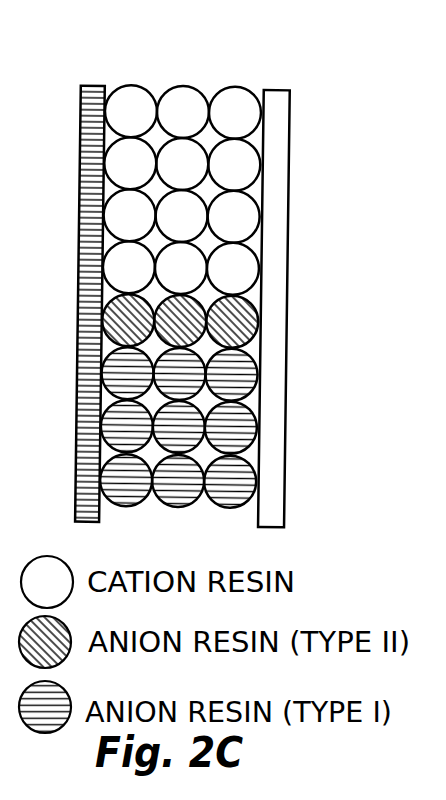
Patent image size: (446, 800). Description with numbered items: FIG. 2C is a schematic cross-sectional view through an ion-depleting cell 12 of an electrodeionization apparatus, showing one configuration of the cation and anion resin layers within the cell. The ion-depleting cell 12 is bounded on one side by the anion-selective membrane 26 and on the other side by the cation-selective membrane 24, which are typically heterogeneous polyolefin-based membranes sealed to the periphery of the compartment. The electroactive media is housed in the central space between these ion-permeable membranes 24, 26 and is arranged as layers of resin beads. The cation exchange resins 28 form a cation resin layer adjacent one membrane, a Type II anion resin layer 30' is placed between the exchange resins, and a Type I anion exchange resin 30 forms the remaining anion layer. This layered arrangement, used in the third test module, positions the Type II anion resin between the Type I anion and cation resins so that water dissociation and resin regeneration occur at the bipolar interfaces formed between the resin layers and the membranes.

The ion-depleting cell 12 is at (78, 282).
The cation-selective membrane 24 is at (278, 89).
The anion-selective membrane 26 is at (95, 87).
The cation exchange resins 28 is at (136, 92).
The Type I anion exchange resin 30 is at (160, 452).
The Type II anion resin layer 30' is at (223, 324).